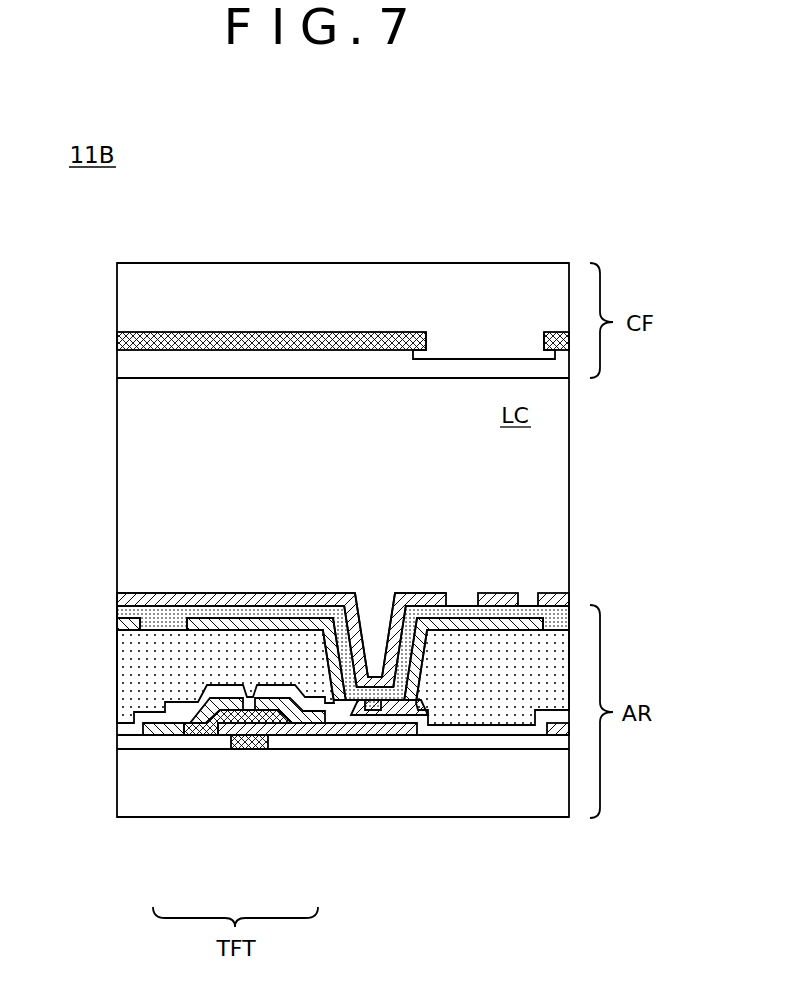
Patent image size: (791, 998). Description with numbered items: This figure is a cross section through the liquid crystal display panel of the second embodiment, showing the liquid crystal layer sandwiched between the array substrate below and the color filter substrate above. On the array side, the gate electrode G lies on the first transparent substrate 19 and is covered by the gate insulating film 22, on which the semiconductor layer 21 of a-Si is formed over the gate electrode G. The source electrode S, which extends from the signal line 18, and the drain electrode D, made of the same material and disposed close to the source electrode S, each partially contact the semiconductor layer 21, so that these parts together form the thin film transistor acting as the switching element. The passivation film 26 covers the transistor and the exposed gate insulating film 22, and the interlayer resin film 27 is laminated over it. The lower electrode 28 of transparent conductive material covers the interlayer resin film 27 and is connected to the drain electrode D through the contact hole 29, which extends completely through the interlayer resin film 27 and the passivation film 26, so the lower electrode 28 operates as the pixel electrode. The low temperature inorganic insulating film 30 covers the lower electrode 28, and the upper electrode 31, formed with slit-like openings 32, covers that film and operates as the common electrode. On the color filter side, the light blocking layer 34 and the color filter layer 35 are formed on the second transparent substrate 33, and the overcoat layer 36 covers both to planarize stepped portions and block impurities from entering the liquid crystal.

The signal line 18 is at (157, 737).
The first transparent substrate 19 is at (488, 777).
The semiconductor layer 21 is at (255, 712).
The gate insulating film 22 is at (407, 737).
The passivation film 26 is at (440, 740).
The interlayer resin film 27 is at (129, 670).
The lower electrode 28 is at (318, 625).
The contact hole 29 is at (376, 685).
The low temperature inorganic insulating film 30 is at (287, 610).
The upper electrode 31 is at (200, 598).
The slit-like opening 32 is at (462, 590).
The second transparent substrate 33 is at (178, 283).
The light blocking layer 34 is at (297, 330).
The color filter layer 35 is at (476, 342).
The overcoat layer 36 is at (340, 370).
The source electrode S is at (218, 708).
The gate electrode G is at (243, 745).
The drain electrode D is at (272, 705).